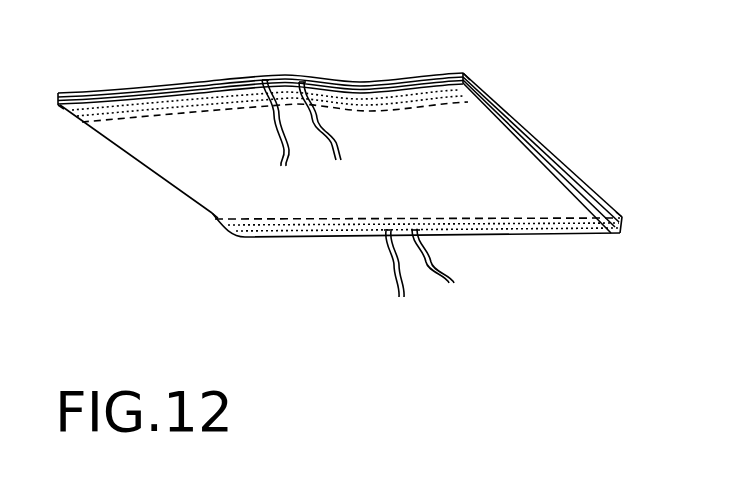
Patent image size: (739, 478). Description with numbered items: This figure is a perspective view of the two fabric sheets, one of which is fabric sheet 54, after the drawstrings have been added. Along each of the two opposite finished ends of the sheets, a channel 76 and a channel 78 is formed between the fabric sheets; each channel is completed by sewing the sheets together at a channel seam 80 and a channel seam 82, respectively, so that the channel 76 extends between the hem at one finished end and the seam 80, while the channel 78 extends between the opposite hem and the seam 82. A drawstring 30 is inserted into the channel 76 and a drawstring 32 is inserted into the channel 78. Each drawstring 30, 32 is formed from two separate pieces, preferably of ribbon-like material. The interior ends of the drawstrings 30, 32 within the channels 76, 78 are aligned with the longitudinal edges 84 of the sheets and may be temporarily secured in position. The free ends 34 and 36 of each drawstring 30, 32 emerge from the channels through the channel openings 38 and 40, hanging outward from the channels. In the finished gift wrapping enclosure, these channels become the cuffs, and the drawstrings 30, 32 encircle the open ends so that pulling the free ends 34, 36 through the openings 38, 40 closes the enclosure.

The drawstring 30 is at (168, 104).
The drawstring 32 is at (283, 228).
The free end 34 is at (282, 165).
The free end 36 is at (335, 138).
The channel opening 38 is at (265, 83).
The channel opening 40 is at (300, 83).
The fabric sheet 54 is at (173, 168).
The channel 76 is at (473, 100).
The channel 78 is at (622, 218).
The channel seam 80 is at (108, 136).
The channel seam 82 is at (218, 216).
The longitudinal edge 84 is at (540, 160).